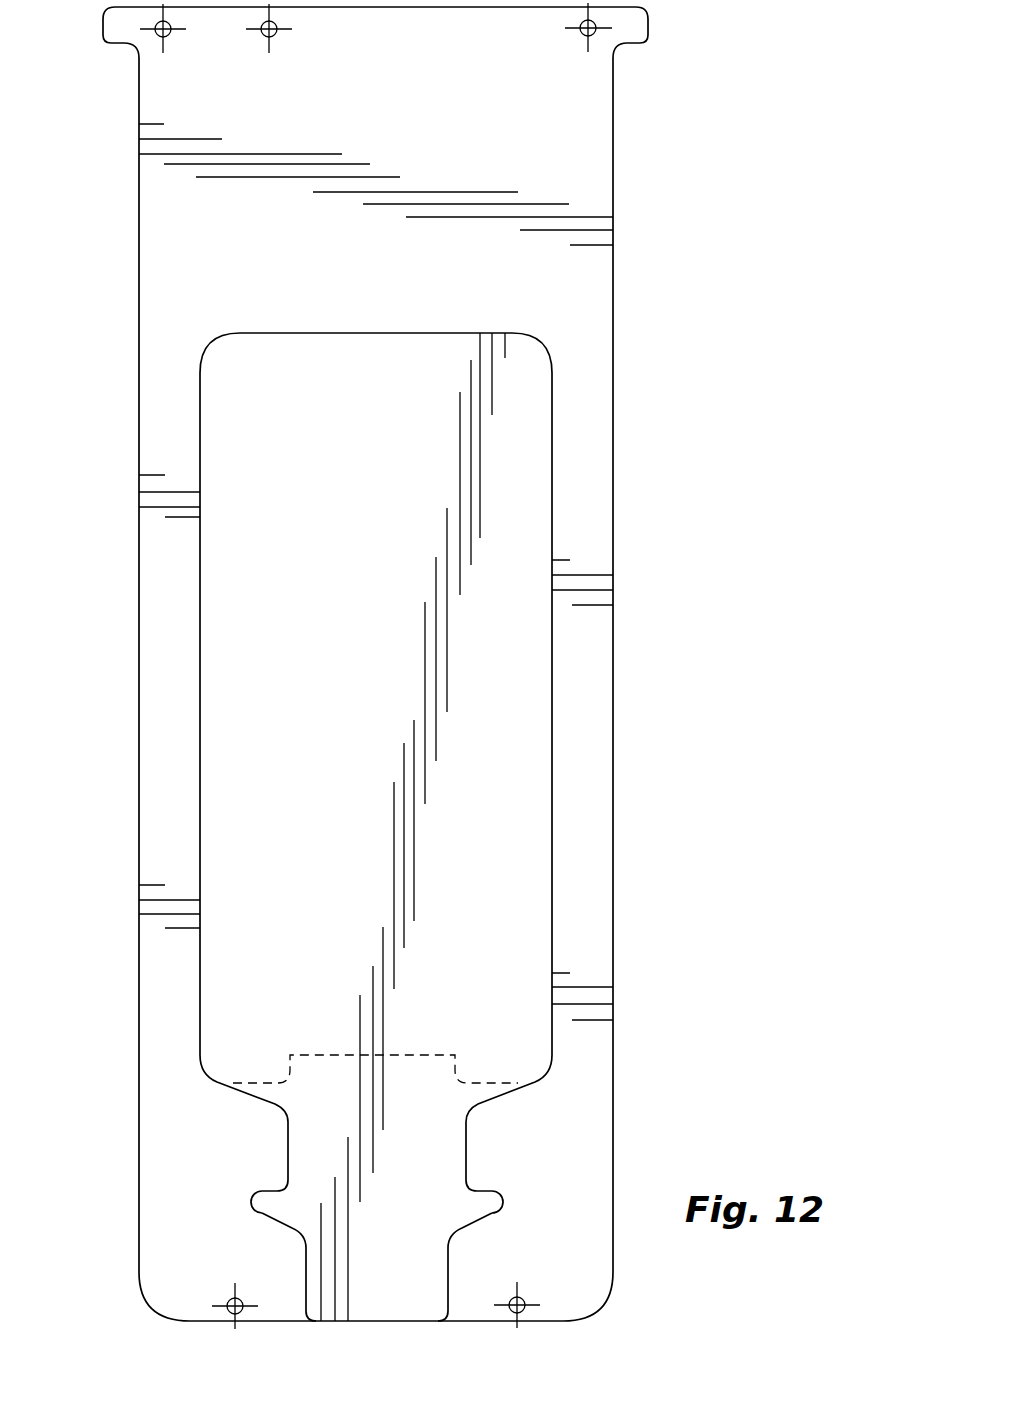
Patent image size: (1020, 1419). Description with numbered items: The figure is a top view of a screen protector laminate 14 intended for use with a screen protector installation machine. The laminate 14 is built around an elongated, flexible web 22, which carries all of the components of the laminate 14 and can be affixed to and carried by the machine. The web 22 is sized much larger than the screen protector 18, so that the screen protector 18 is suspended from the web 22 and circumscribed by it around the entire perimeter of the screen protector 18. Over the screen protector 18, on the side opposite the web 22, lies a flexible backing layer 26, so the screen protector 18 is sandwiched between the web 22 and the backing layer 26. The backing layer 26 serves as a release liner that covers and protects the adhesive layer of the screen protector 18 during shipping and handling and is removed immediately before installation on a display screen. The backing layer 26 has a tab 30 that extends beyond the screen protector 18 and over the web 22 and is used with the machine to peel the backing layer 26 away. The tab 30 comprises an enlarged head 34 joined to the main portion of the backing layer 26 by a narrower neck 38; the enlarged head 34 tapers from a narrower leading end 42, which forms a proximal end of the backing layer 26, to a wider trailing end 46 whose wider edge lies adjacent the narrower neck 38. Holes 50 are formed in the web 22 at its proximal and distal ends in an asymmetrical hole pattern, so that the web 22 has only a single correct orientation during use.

The screen protector laminate 14 is at (636, 367).
The web 22 is at (600, 525).
The backing layer 26 is at (508, 657).
The screen protector 18 is at (455, 1055).
The tab 30 is at (437, 1163).
The narrower neck 38 is at (288, 1147).
The enlarged head 34 is at (262, 1203).
The wider trailing end 46 is at (495, 1190).
The narrower leading end 42 is at (437, 1277).
The holes 50 is at (593, 37).